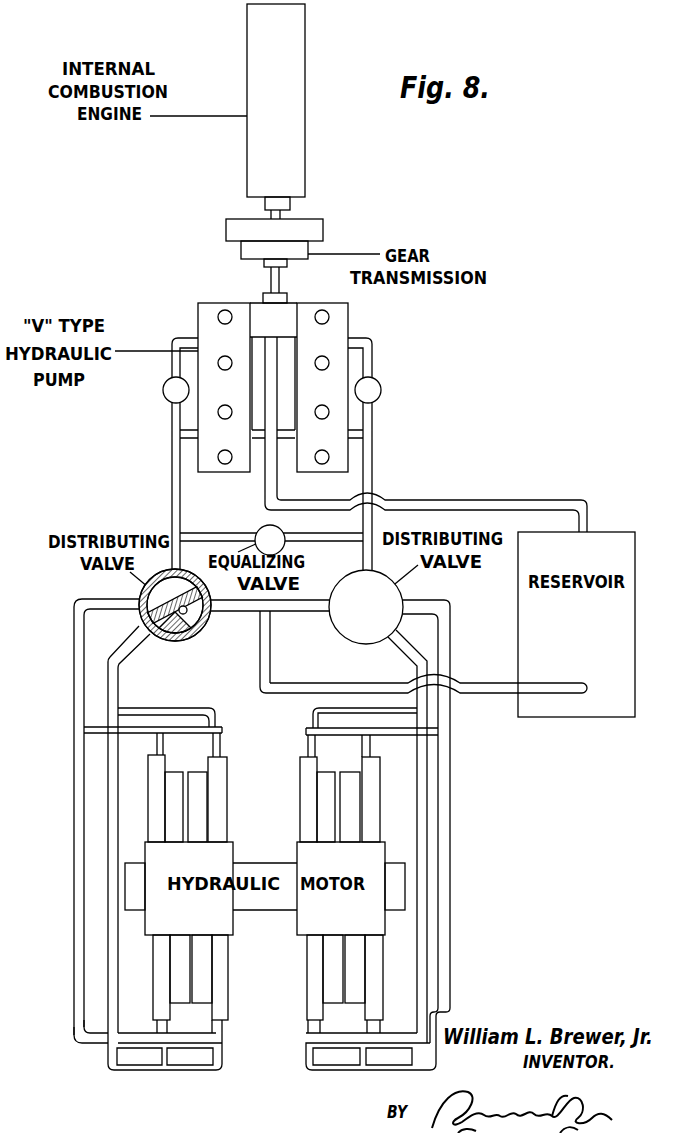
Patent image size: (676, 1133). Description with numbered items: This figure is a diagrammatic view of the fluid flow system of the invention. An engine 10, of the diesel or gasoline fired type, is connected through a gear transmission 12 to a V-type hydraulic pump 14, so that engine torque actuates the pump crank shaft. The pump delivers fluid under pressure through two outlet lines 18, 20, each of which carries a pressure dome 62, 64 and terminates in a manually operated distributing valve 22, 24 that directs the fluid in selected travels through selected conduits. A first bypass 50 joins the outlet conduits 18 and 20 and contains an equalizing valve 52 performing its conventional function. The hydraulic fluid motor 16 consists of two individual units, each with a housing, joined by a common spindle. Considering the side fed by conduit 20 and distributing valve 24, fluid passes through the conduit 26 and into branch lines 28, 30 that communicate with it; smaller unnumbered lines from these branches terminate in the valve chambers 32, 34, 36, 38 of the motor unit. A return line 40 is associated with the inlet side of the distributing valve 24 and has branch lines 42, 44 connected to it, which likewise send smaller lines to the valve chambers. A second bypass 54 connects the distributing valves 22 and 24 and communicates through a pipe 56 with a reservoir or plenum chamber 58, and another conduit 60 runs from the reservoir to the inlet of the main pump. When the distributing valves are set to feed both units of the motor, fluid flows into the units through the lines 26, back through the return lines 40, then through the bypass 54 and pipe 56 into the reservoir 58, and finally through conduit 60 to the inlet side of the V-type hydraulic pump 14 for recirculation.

The engine 10 is at (292, 152).
The gear transmission 12 is at (318, 236).
The V-type hydraulic pump 14 is at (337, 323).
The hydraulic fluid motor 16 is at (257, 910).
The outlet line 18 is at (367, 446).
The outlet line 20 is at (172, 448).
The distributing valve 22 is at (395, 594).
The distributing valve 24 is at (131, 595).
The conduit 26 is at (73, 688).
The branch line 28 is at (218, 730).
The branch line 30 is at (92, 1045).
The valve chamber 32 is at (222, 778).
The valve chamber 34 is at (156, 773).
The valve chamber 36 is at (222, 990).
The valve chamber 38 is at (160, 957).
The return line 40 is at (132, 647).
The branch line 42 is at (188, 708).
The branch line 44 is at (188, 1070).
The first bypass 50 is at (205, 536).
The equalizing valve 52 is at (283, 536).
The second bypass 54 is at (225, 608).
The pipe 56 is at (468, 684).
The reservoir 58 is at (600, 710).
The conduit 60 is at (460, 498).
The pressure dome 62 is at (381, 390).
The pressure dome 64 is at (164, 391).